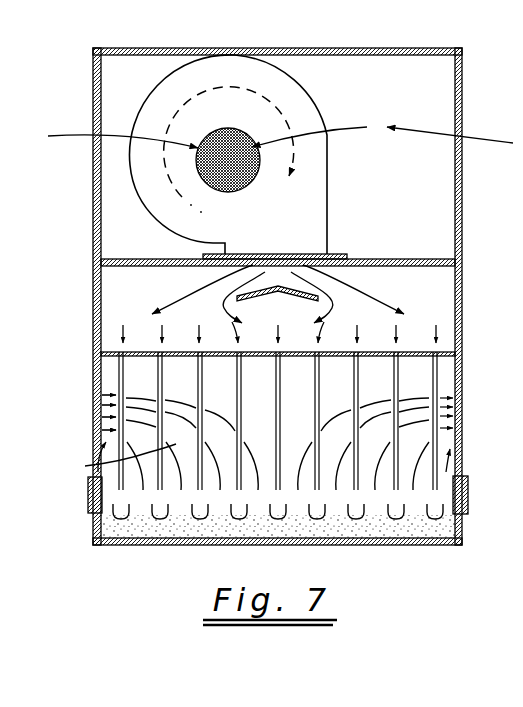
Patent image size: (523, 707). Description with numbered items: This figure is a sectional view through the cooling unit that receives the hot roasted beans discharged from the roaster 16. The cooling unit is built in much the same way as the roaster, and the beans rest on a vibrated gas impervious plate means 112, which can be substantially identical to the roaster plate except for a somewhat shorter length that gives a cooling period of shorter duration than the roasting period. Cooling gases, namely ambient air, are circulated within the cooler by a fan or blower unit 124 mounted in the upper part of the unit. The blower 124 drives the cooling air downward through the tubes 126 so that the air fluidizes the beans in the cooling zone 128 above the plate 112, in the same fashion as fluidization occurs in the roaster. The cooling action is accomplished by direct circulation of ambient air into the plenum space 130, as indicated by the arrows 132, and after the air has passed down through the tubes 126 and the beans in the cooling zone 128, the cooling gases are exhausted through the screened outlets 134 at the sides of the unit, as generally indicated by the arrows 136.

The roaster 16 is at (415, 394).
The vibrated gas impervious plate means 112 is at (367, 542).
The fan or blower unit 124 is at (291, 88).
The tubes 126 is at (243, 380).
The cooling zone 128 is at (294, 518).
The plenum space 130 is at (442, 243).
The arrows 132 is at (482, 133).
The screened outlets 134 is at (98, 406).
The arrows 136 is at (172, 443).